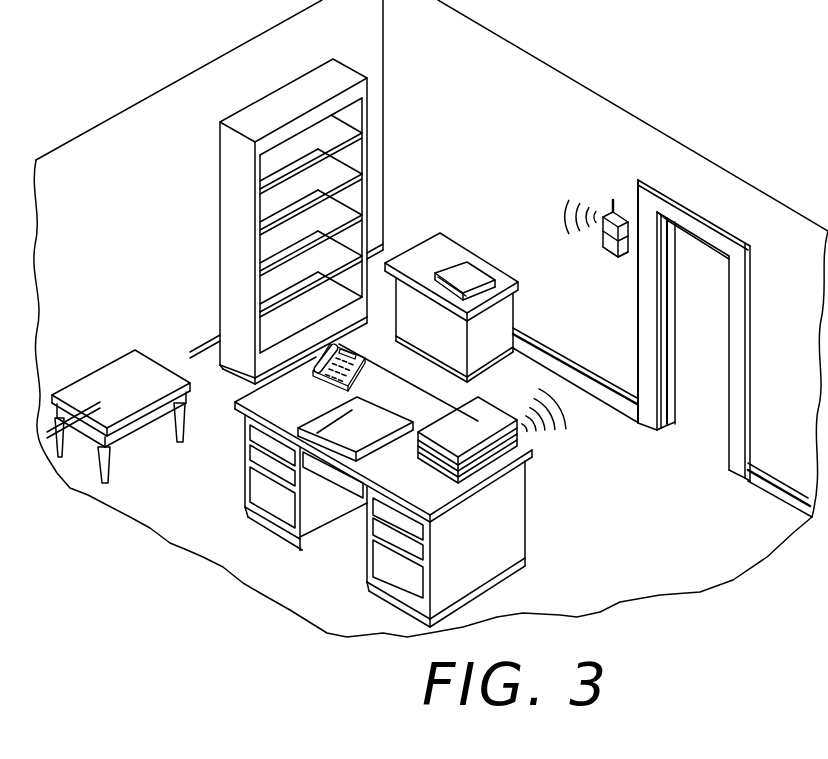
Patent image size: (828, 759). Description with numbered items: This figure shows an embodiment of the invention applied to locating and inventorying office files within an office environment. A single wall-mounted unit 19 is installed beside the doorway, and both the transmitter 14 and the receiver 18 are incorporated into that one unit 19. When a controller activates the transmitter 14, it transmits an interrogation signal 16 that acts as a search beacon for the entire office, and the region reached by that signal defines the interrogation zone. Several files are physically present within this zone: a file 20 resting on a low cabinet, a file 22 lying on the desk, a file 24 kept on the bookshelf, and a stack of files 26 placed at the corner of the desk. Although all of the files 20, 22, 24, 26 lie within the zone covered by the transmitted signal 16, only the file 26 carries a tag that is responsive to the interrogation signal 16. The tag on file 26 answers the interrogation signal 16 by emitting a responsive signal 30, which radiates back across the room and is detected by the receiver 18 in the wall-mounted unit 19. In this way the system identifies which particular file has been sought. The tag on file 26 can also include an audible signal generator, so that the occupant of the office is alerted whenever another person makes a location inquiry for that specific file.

The transmitter 14 is at (625, 217).
The interrogation signal 16 is at (577, 200).
The receiver 18 is at (603, 247).
The wall-mounted unit 19 is at (626, 261).
The file 20 is at (474, 281).
The file 22 is at (352, 425).
The file 24 is at (343, 174).
The file 26 is at (483, 462).
The responsive signal 30 is at (583, 428).